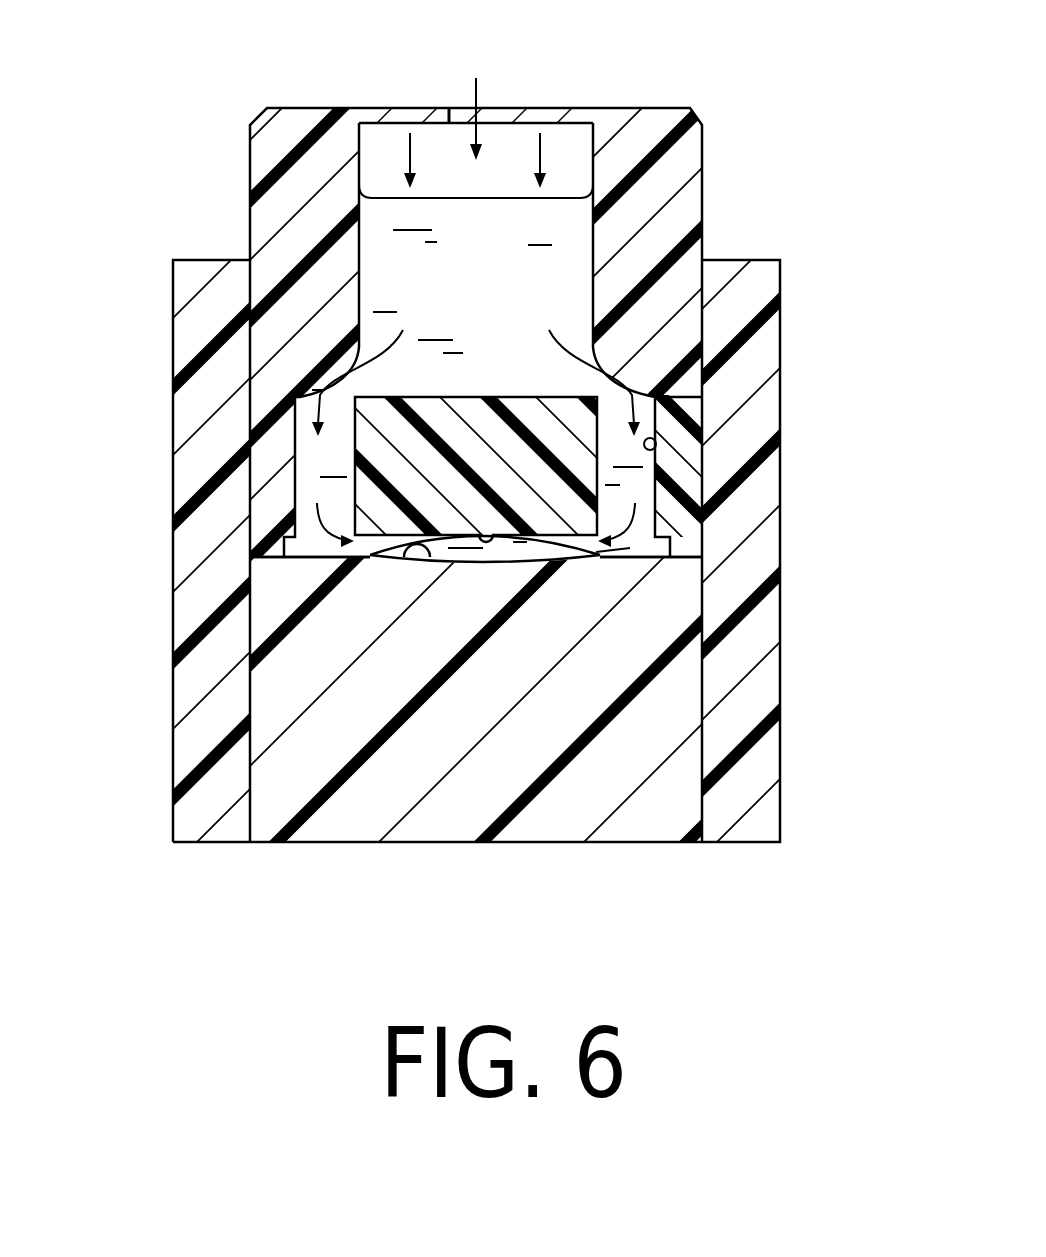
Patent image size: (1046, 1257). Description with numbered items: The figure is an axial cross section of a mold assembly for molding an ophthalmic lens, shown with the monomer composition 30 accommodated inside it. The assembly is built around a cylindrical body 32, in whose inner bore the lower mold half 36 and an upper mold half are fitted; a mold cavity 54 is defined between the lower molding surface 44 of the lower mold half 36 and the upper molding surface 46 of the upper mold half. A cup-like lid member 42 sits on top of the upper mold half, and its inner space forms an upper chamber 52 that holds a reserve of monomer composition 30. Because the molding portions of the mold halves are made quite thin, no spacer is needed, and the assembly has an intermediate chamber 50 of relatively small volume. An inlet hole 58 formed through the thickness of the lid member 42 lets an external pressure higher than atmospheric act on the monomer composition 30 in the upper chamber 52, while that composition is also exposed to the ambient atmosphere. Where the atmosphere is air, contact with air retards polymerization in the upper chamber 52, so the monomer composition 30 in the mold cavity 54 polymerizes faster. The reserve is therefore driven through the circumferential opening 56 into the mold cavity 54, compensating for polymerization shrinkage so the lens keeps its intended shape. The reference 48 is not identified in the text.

The monomer composition 30 is at (500, 296).
The cylindrical body 32 is at (800, 302).
The lower mold half 36 is at (430, 860).
The lid member 42 is at (727, 148).
The lower molding surface 44 is at (404, 570).
The upper molding surface 46 is at (483, 530).
The gap 48 is at (305, 395).
The intermediate chamber 50 is at (287, 558).
The upper chamber 52 is at (432, 147).
The mold cavity 54 is at (505, 565).
The circumferential opening 56 is at (604, 553).
The inlet hole 58 is at (489, 110).